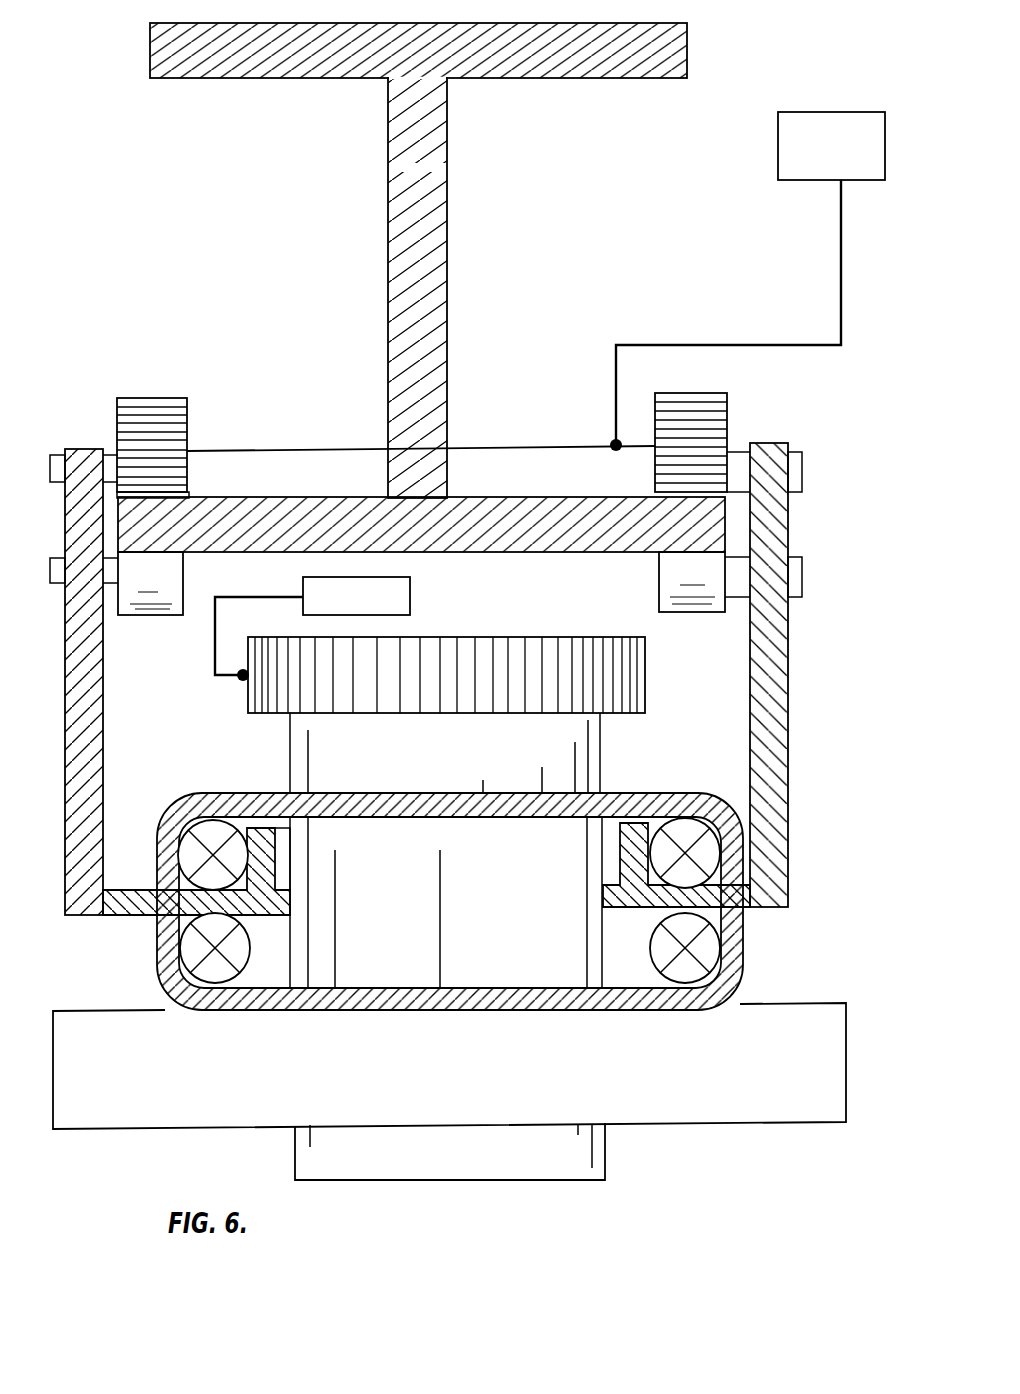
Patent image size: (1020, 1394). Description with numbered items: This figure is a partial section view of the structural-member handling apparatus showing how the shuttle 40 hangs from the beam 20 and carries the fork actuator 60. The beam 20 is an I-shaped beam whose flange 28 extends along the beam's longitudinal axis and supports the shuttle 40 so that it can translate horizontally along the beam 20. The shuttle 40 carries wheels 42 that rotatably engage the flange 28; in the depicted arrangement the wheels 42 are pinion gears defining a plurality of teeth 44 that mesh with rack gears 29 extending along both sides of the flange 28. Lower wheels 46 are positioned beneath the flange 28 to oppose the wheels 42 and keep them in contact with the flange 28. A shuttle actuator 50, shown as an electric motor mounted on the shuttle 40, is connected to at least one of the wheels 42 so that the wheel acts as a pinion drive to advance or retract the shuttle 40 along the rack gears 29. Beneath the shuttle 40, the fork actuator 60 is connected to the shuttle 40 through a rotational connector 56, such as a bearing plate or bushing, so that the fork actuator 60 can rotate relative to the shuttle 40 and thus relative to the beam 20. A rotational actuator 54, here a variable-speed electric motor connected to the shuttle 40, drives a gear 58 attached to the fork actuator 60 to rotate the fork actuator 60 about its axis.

The beam 20 is at (388, 232).
The flange 28 is at (728, 522).
The rack gears 29 is at (190, 495).
The shuttle 40 is at (790, 768).
The wheels 42 is at (117, 408).
The teeth 44 is at (172, 410).
The lower wheels 46 is at (140, 615).
The shuttle actuator 50 is at (778, 152).
The rotational actuator 54 is at (411, 596).
The rotational connector 56 is at (745, 945).
The gear 58 is at (647, 680).
The fork actuator 60 is at (605, 1152).